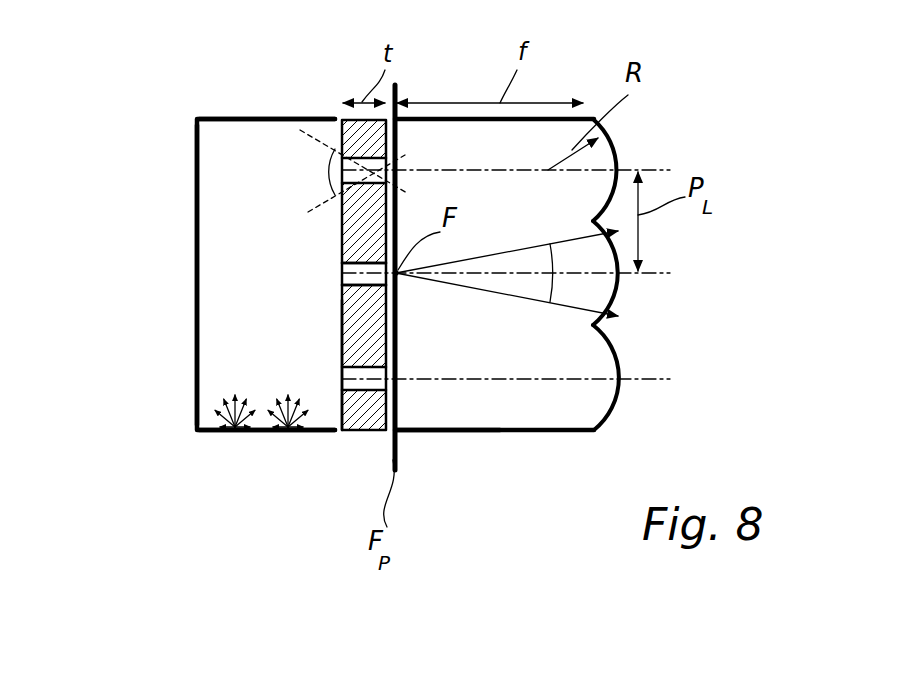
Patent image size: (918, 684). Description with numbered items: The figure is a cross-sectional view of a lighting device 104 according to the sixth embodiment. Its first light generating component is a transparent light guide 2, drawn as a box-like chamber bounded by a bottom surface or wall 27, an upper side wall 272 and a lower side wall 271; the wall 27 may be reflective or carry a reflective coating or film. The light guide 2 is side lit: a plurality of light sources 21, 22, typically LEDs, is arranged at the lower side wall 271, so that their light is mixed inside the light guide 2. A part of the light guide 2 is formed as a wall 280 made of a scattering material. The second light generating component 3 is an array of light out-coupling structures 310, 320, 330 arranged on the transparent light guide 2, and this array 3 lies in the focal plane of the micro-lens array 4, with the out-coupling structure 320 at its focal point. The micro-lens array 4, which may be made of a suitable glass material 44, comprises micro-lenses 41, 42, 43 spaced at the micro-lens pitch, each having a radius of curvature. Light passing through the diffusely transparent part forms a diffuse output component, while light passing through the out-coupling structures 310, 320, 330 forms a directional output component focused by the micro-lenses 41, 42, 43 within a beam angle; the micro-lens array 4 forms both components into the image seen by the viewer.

The lighting device 104 is at (132, 103).
The transparent light guide 2 is at (235, 118).
The bottom surface or wall 27 is at (200, 266).
The lower side wall 271 is at (263, 433).
The side wall 272 is at (305, 118).
The light source 21 is at (235, 432).
The light source 22 is at (288, 432).
The second light generating component 3 is at (358, 437).
The light out-coupling structure 310 is at (342, 382).
The light out-coupling structure 330 is at (385, 168).
The wall of scattering material 280 is at (350, 263).
The light out-coupling structure 320 is at (398, 278).
The micro-lens array 4 is at (553, 302).
The micro-lens 41 is at (615, 158).
The micro-lens 42 is at (615, 287).
The micro-lens 43 is at (614, 397).
The glass material 44 is at (442, 405).